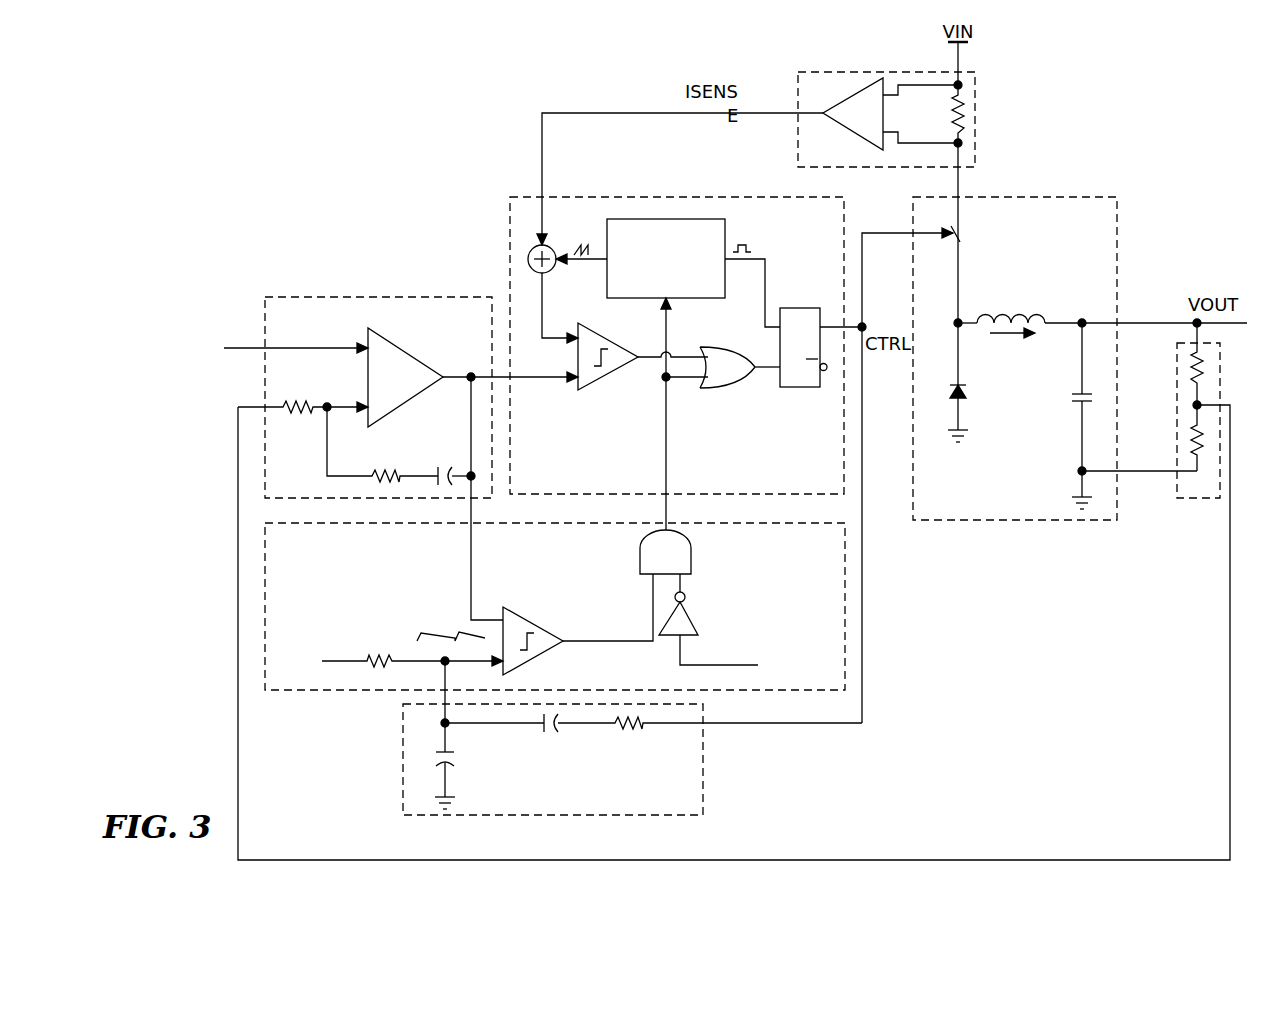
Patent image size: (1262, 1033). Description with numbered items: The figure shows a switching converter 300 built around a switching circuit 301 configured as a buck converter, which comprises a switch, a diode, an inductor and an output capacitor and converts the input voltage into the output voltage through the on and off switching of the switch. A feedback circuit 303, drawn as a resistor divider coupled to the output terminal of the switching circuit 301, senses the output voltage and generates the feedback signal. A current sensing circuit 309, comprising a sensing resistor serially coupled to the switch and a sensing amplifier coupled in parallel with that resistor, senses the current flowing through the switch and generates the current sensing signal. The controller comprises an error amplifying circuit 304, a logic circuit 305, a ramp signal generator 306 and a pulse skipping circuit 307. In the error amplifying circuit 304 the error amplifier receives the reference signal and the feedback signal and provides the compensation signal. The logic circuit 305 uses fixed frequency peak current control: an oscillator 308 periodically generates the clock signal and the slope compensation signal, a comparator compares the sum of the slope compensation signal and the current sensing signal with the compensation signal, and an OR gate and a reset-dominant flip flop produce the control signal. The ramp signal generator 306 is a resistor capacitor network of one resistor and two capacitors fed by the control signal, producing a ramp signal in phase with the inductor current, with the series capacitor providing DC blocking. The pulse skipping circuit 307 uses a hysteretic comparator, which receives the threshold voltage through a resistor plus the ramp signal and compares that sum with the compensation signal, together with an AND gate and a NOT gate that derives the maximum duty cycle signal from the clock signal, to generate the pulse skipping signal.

The switching converter 300 is at (1232, 88).
The switching circuit 301 is at (960, 520).
The feedback circuit 303 is at (1183, 498).
The error amplifying circuit 304 is at (283, 297).
The logic circuit 305 is at (660, 363).
The ramp signal generator 306 is at (403, 758).
The pulse skipping circuit 307 is at (295, 690).
The oscillator 308 is at (666, 258).
The current sensing circuit 309 is at (975, 142).